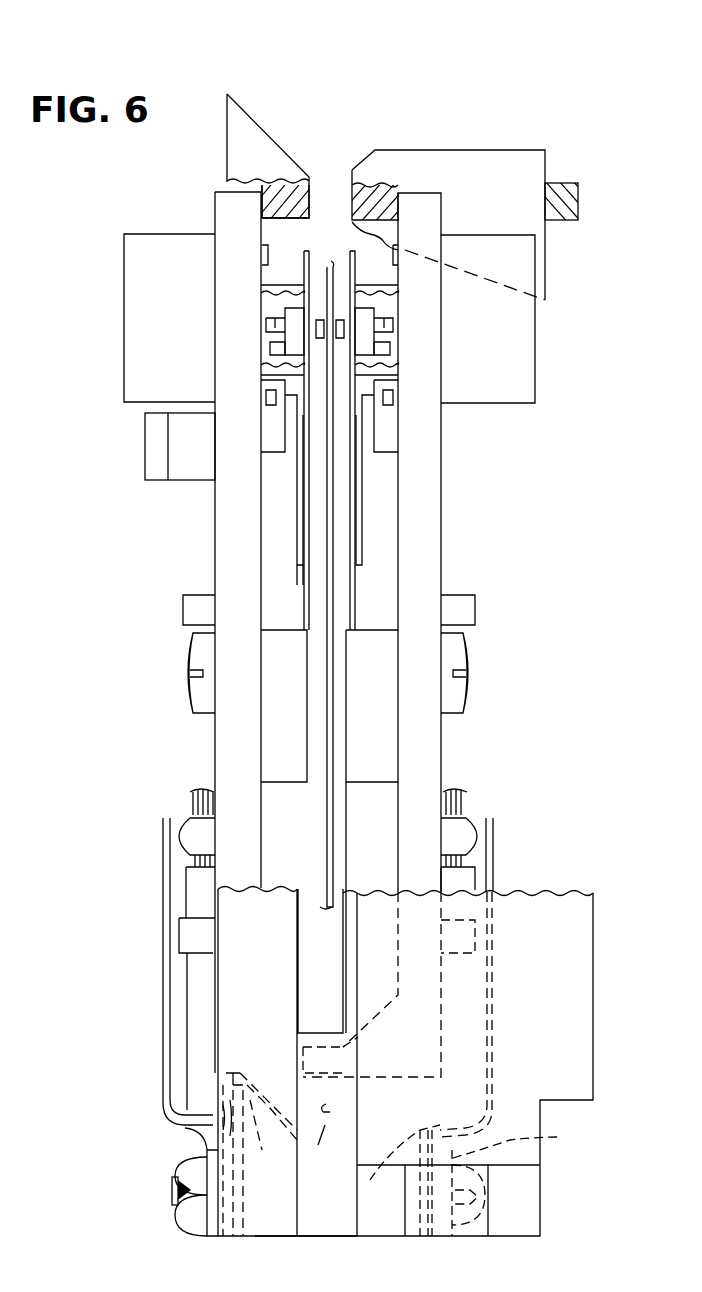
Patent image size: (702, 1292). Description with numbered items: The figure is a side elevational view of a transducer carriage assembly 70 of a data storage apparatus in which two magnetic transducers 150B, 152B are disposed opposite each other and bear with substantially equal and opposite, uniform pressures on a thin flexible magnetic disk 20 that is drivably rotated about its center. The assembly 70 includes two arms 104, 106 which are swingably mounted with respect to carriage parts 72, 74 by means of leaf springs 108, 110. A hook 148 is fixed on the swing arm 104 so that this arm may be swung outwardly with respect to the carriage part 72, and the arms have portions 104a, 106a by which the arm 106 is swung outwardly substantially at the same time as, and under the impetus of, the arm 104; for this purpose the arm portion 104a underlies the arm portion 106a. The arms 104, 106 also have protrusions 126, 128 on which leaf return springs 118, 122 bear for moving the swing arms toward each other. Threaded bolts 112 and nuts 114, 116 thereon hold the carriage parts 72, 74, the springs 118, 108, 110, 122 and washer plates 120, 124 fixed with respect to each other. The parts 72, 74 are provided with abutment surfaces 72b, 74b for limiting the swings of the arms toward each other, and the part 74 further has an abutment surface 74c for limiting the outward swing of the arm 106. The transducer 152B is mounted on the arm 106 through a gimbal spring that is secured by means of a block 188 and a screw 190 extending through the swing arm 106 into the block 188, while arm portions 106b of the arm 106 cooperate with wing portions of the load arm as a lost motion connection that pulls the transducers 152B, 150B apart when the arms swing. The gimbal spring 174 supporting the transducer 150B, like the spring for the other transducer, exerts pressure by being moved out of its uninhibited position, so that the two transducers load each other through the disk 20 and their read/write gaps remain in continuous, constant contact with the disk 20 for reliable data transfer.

The magnetic disk 20 is at (333, 603).
The transducer carriage assembly 70 is at (594, 968).
The carriage part 72 is at (275, 1236).
The abutment surface 72b is at (261, 210).
The carriage part 74 is at (330, 1236).
The abutment surface 74b is at (400, 212).
The abutment surface 74c is at (545, 192).
The swing arm 104 is at (215, 514).
The arm portion 104a is at (329, 1140).
The swing arm 106 is at (441, 500).
The arm portion 106a is at (338, 1061).
The arm portions 106b is at (390, 438).
The leaf spring 108 is at (260, 1154).
The leaf spring 110 is at (397, 1166).
The threaded bolts 112 is at (164, 1194).
The nut 114 is at (192, 1150).
The nut 116 is at (529, 1143).
The leaf return spring 118 is at (163, 860).
The washer plate 120 is at (212, 1236).
The leaf return spring 122 is at (495, 860).
The washer plate 124 is at (440, 1236).
The protrusion 126 is at (184, 815).
The protrusion 128 is at (477, 816).
The hook 148 is at (145, 453).
The magnetic transducer 150B is at (315, 333).
The magnetic transducer 152B is at (343, 345).
The gimbal spring 174 is at (300, 583).
The block 188 is at (375, 742).
The screw 190 is at (470, 660).